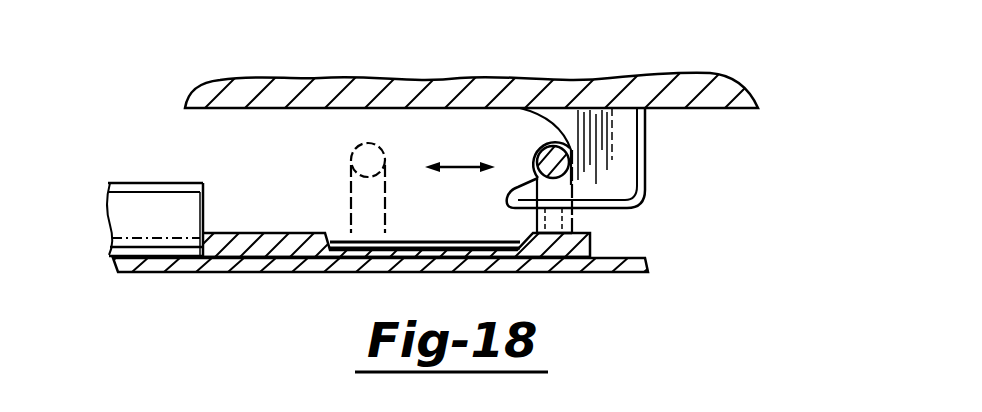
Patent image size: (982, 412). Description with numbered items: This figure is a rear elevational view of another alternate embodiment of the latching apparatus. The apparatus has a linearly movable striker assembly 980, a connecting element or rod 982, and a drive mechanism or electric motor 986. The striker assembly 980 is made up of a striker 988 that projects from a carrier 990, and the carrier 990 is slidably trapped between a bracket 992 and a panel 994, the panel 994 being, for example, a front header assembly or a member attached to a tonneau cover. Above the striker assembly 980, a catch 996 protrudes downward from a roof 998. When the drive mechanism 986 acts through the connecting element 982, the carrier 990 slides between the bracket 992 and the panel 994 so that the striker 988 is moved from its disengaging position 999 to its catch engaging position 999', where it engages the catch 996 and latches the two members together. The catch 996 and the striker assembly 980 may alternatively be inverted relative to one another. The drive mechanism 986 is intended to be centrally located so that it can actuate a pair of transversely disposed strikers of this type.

The striker assembly 980 is at (612, 230).
The connecting element 982 is at (260, 248).
The drive mechanism 986 is at (153, 220).
The striker 988 is at (547, 143).
The carrier 990 is at (589, 255).
The bracket 992 is at (310, 272).
The panel 994 is at (636, 265).
The catch 996 is at (612, 155).
The roof 998 is at (705, 110).
The disengaging position 999 is at (362, 175).
The catch engaging position 999' is at (462, 90).